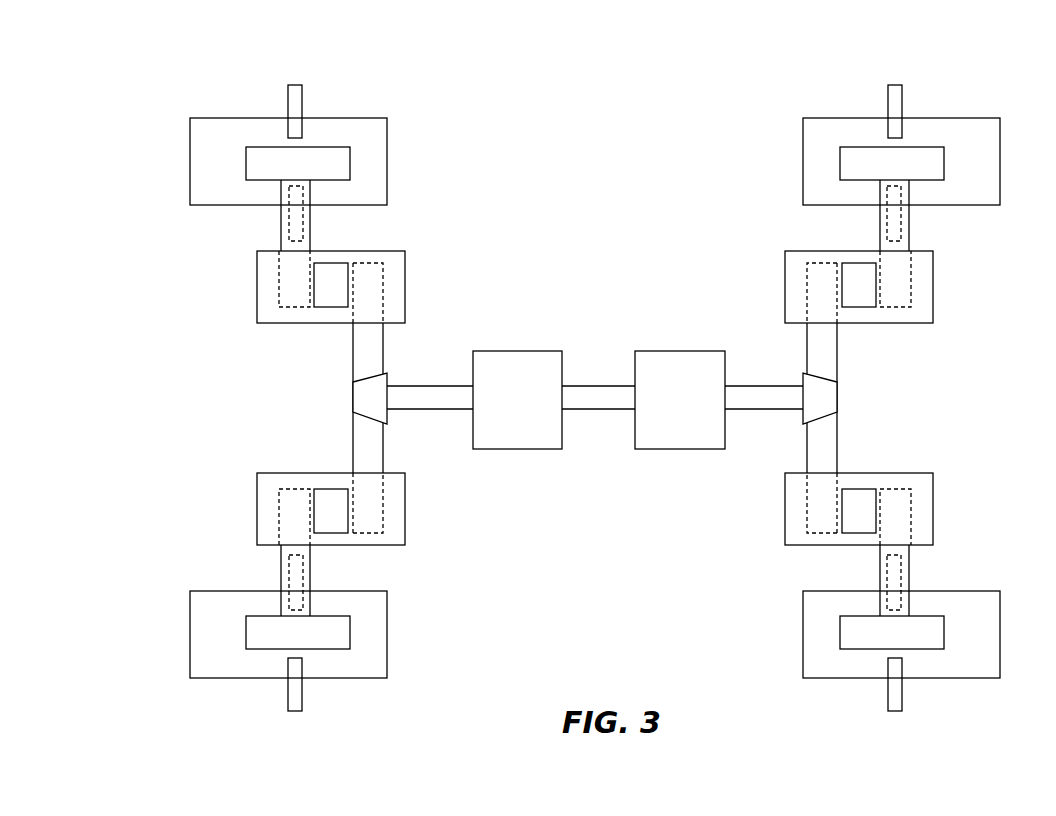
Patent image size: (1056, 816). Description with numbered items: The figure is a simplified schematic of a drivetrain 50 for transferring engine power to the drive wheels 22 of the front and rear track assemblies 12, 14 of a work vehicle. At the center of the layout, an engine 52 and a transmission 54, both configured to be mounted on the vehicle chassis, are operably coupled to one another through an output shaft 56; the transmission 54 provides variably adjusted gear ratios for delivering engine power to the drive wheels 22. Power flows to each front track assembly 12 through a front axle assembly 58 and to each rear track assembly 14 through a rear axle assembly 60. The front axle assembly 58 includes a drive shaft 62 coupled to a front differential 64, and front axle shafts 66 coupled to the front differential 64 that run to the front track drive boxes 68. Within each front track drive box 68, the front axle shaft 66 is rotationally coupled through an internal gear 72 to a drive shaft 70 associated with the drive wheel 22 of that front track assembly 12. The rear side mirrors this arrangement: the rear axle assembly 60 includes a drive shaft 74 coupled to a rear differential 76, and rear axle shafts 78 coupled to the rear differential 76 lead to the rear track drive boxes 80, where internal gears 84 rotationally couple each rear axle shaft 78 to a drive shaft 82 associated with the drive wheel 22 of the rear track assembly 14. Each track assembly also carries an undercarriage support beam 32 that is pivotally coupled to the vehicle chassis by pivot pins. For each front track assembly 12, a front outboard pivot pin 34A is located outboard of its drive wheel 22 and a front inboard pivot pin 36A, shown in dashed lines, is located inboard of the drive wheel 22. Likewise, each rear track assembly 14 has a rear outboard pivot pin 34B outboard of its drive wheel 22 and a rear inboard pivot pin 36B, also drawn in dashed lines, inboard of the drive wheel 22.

The front track assembly 12 is at (972, 104).
The rear track assembly 14 is at (218, 104).
The drive wheel 22 is at (247, 167).
The undercarriage support beam 32 is at (378, 206).
The front outboard pivot pin 34A is at (888, 112).
The rear outboard pivot pin 34B is at (303, 112).
The front inboard pivot pin 36A is at (902, 216).
The rear inboard pivot pin 36B is at (288, 216).
The drivetrain 50 is at (654, 105).
The engine 52 is at (506, 410).
The transmission 54 is at (671, 410).
The output shaft 56 is at (587, 411).
The front axle assembly 58 is at (951, 381).
The rear axle assembly 60 is at (233, 389).
The drive shaft 62 is at (749, 386).
The front differential 64 is at (827, 395).
The front axle shaft 66 is at (823, 353).
The front track drive box 68 is at (785, 270).
The drive shaft 70 is at (879, 212).
The internal gear 72 is at (856, 287).
The drive shaft 74 is at (439, 386).
The rear differential 76 is at (363, 395).
The rear axle shaft 78 is at (367, 354).
The rear track drive box 80 is at (405, 270).
The drive shaft 82 is at (311, 212).
The internal gear 84 is at (333, 287).